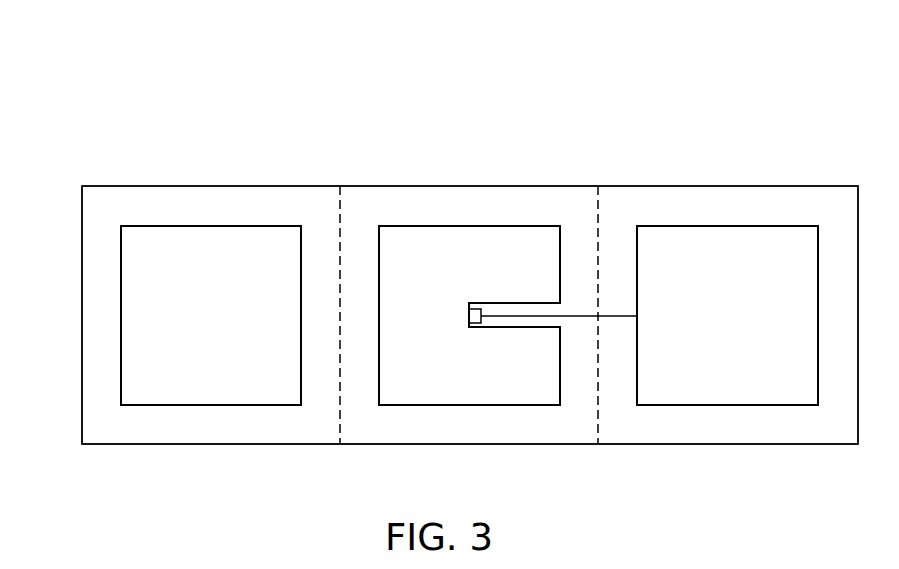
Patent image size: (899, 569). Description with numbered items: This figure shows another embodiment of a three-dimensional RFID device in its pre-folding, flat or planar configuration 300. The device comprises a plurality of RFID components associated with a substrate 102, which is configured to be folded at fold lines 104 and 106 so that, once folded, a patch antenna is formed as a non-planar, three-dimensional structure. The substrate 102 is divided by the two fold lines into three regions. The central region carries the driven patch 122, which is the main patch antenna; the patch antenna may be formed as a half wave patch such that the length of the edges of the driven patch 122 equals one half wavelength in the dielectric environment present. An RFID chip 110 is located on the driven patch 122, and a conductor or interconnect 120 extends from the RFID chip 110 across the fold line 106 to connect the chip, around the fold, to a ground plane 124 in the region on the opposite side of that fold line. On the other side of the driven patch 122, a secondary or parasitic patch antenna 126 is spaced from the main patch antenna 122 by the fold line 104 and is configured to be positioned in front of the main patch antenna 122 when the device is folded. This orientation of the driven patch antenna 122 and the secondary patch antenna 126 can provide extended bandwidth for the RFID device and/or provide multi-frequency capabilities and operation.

The flat or planar configuration 300 is at (113, 128).
The substrate 102 is at (110, 433).
The fold line 104 is at (341, 200).
The fold line 106 is at (599, 200).
The RFID chip 110 is at (468, 316).
The conductor or interconnect 120 is at (623, 316).
The driven patch 122 is at (469, 230).
The ground plane 124 is at (725, 230).
The secondary or parasitic patch antenna 126 is at (218, 228).